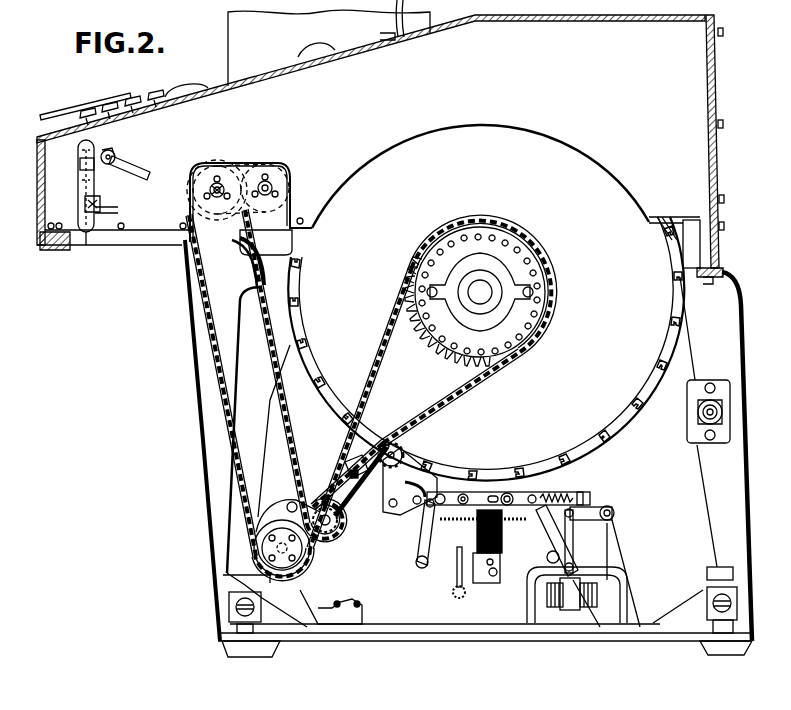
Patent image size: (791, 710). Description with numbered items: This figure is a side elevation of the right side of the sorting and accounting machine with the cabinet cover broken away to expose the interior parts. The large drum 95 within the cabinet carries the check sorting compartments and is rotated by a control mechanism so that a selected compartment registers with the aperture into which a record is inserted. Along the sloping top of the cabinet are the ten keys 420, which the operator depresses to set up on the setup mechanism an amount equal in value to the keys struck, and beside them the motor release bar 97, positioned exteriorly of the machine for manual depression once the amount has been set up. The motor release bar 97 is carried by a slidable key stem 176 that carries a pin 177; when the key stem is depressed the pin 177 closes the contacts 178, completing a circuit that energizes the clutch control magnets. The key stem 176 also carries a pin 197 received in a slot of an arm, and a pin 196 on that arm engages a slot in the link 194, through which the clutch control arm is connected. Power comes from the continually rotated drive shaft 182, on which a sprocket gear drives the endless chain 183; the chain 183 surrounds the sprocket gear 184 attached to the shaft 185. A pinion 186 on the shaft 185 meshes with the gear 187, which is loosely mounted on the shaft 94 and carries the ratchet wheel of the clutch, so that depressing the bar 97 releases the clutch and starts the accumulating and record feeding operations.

The motor release bar 97 is at (62, 112).
The keys 420 is at (156, 97).
The slidable key stem 176 is at (95, 146).
The pin 196 is at (114, 152).
The link 194 is at (140, 166).
The pin 197 is at (79, 165).
The pin 177 is at (99, 199).
The contacts 178 is at (88, 246).
The shaft 185 is at (210, 191).
The pinion 186 is at (219, 160).
The gear 187 is at (276, 164).
The shaft 94 is at (274, 188).
The drum 95 is at (550, 160).
The sprocket gear 184 is at (184, 251).
The endless chain 183 is at (232, 424).
The drive shaft 182 is at (300, 550).